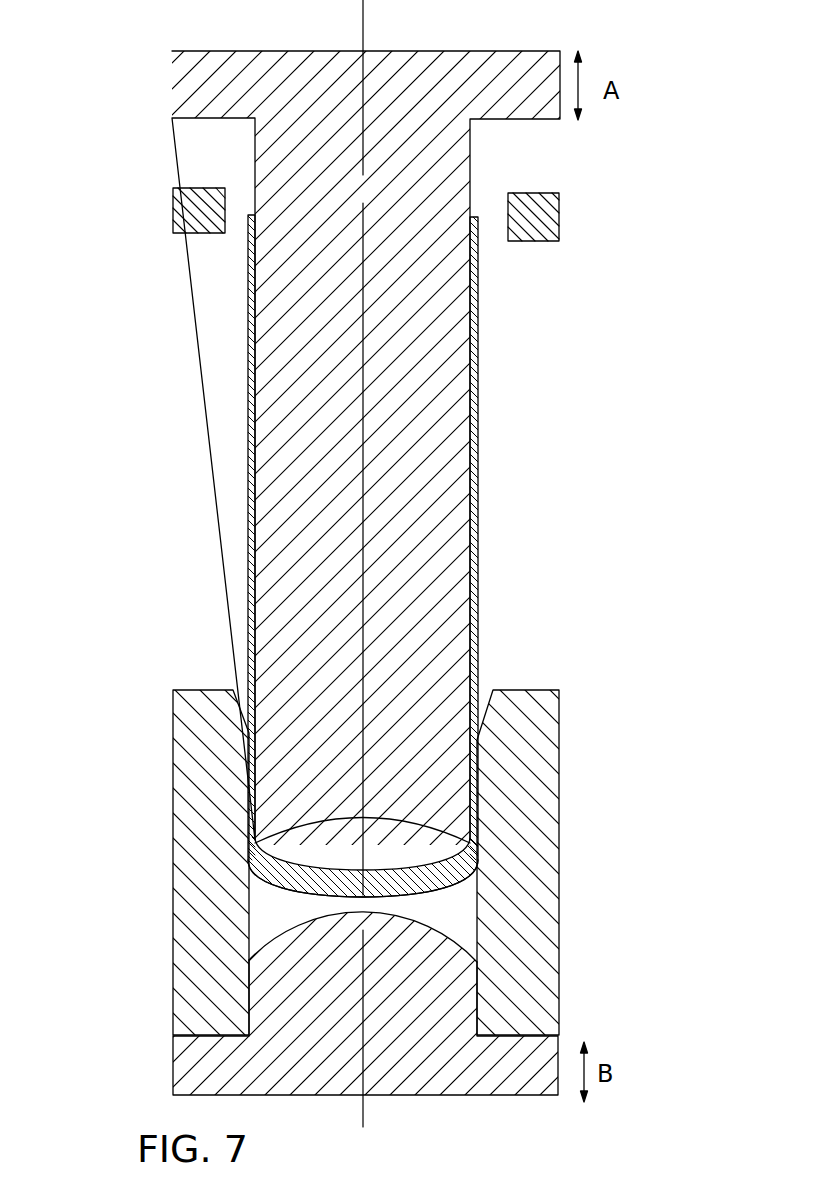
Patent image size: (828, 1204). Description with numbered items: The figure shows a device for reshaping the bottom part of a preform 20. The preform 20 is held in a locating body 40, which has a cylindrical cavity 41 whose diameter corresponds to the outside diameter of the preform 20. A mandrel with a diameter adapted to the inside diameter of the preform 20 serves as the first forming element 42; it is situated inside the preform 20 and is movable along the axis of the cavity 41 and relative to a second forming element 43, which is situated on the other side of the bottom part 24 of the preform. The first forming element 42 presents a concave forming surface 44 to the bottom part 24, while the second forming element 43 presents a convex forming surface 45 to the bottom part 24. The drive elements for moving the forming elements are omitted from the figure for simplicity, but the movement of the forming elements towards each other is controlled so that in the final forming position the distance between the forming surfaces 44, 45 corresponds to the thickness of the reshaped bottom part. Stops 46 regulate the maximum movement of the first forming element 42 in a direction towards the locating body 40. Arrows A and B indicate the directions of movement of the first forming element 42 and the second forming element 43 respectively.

The preform 20 is at (496, 376).
The bottom part 24 is at (407, 886).
The locating body 40 is at (175, 792).
The cylindrical cavity 41 is at (465, 928).
The first forming element 42 is at (442, 478).
The second forming element 43 is at (455, 987).
The concave forming surface 44 is at (437, 832).
The convex forming surface 45 is at (457, 940).
The stops 46 is at (188, 205).